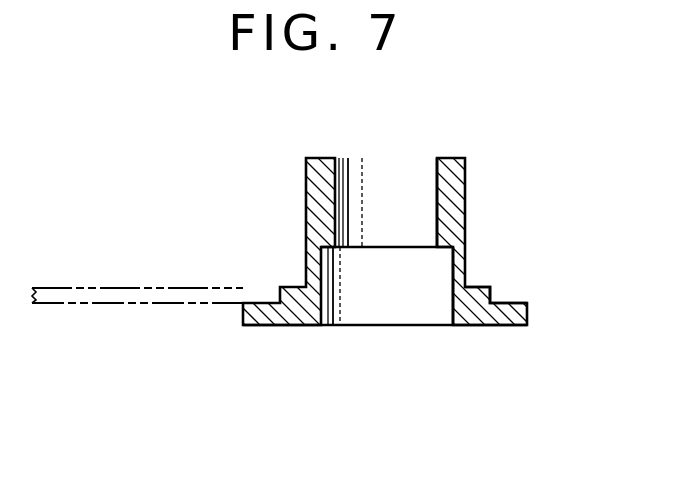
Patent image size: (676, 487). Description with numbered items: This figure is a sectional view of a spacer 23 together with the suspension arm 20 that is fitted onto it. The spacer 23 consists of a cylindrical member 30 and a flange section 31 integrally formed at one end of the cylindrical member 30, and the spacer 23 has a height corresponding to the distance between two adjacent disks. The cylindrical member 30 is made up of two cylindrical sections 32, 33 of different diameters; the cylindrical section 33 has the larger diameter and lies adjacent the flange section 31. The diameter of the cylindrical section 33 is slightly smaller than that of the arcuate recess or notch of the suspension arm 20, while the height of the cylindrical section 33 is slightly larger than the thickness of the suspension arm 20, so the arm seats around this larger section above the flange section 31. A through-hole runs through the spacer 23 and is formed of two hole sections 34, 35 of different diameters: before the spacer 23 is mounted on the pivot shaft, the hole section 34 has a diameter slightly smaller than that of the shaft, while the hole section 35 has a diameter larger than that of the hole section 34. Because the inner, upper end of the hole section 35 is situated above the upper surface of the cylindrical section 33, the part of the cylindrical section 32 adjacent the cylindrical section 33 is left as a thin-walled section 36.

The suspension arm 20 is at (135, 304).
The spacer 23 is at (290, 141).
The cylindrical member 30 is at (457, 148).
The flange section 31 is at (519, 329).
The cylindrical section 32 is at (465, 209).
The cylindrical section 33 is at (491, 294).
The hole section 34 is at (338, 182).
The hole section 35 is at (452, 299).
The thin-walled section 36 is at (306, 268).